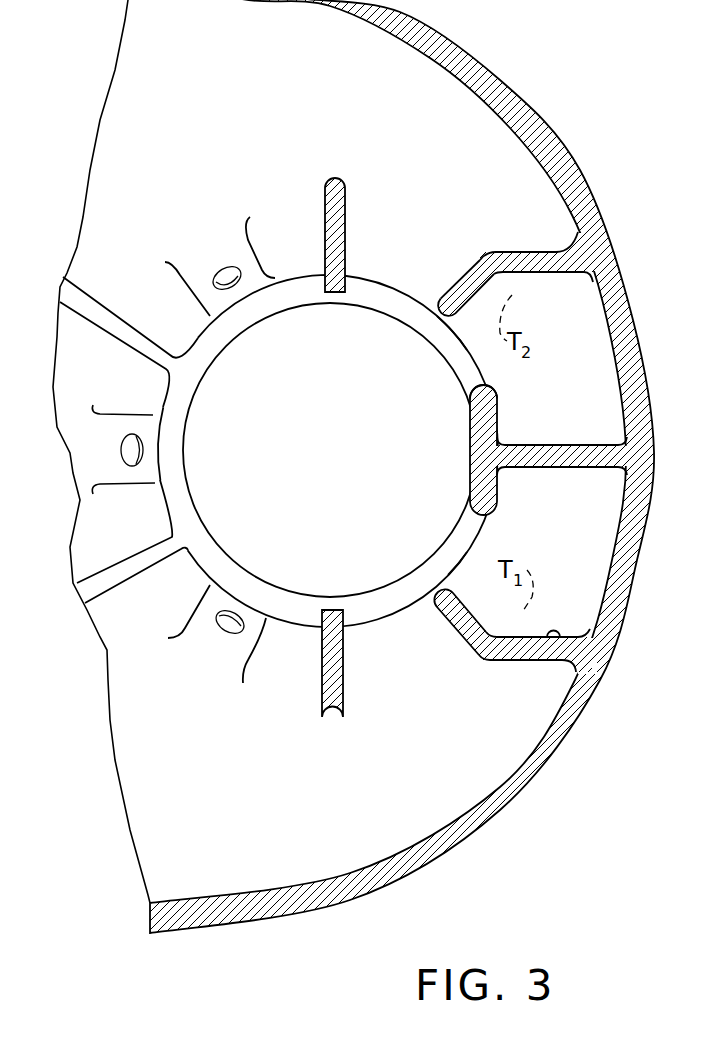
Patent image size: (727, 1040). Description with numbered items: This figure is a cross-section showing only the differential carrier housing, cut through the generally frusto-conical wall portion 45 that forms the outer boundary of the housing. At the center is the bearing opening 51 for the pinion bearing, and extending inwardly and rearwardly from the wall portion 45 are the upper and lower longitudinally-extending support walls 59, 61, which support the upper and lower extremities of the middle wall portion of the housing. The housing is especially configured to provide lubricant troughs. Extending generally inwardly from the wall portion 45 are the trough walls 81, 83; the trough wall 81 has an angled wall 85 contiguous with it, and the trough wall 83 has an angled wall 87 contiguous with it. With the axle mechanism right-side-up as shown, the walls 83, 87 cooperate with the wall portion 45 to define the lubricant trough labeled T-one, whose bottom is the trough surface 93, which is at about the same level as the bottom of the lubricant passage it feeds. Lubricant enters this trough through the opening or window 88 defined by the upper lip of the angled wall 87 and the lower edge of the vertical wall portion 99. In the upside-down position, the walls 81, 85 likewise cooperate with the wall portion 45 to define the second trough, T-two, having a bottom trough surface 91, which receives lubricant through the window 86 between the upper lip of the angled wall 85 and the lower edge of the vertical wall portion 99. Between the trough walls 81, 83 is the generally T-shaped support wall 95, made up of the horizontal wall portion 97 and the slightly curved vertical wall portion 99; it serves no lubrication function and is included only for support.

The frusto-conical wall portion 45 is at (504, 786).
The bearing opening 51 is at (187, 457).
The upper longitudinally-extending support wall 59 is at (340, 237).
The lower longitudinally-extending support wall 61 is at (342, 668).
The trough wall 81 is at (527, 262).
The trough wall 83 is at (520, 658).
The angled wall 85 is at (465, 288).
The opening or window 86 is at (460, 352).
The angled wall 87 is at (463, 622).
The opening or window 88 is at (452, 558).
The trough surface 91 is at (555, 275).
The trough surface 93 is at (550, 640).
The T-shaped support wall 95 is at (463, 449).
The horizontal wall portion 97 is at (563, 457).
The vertical wall portion 99 is at (480, 416).